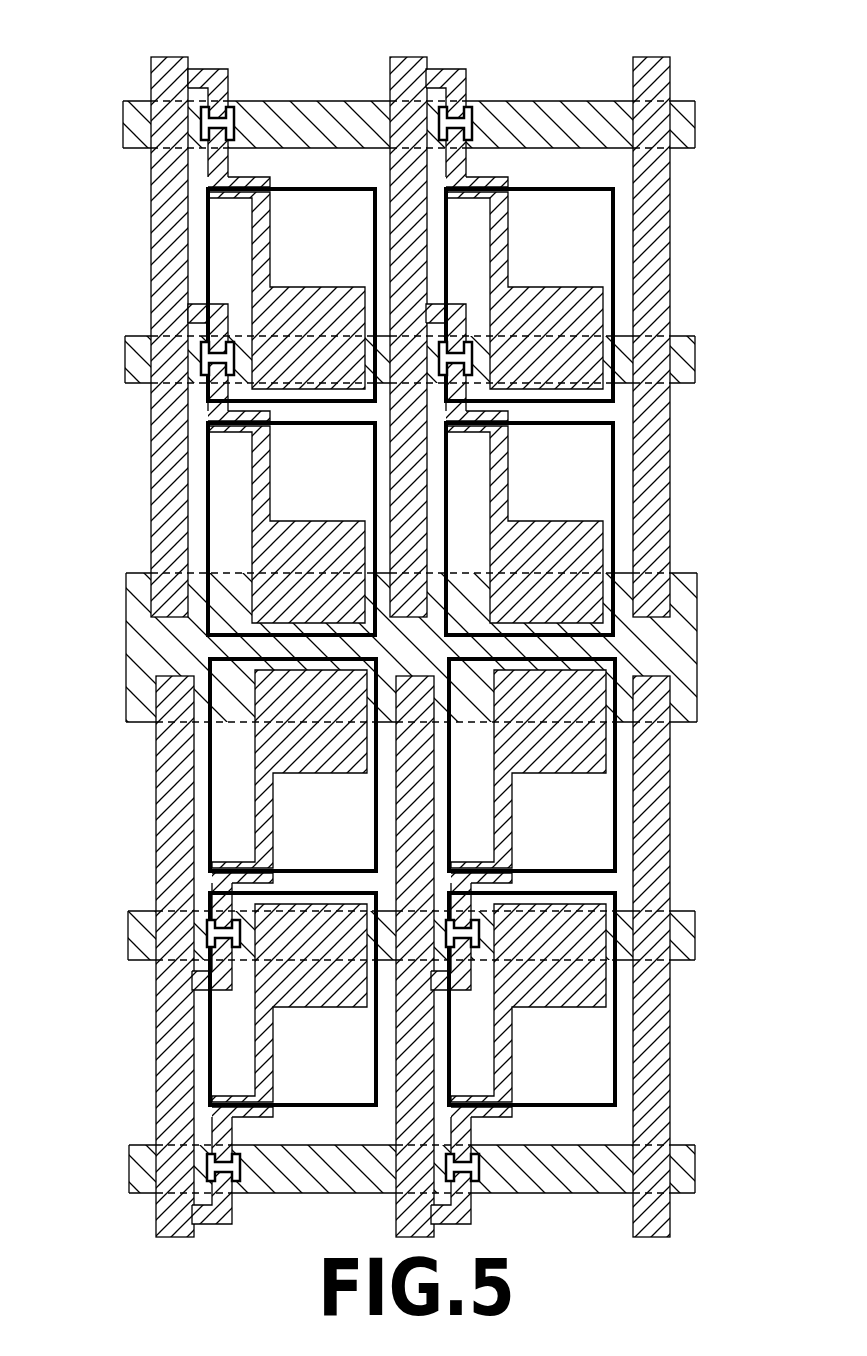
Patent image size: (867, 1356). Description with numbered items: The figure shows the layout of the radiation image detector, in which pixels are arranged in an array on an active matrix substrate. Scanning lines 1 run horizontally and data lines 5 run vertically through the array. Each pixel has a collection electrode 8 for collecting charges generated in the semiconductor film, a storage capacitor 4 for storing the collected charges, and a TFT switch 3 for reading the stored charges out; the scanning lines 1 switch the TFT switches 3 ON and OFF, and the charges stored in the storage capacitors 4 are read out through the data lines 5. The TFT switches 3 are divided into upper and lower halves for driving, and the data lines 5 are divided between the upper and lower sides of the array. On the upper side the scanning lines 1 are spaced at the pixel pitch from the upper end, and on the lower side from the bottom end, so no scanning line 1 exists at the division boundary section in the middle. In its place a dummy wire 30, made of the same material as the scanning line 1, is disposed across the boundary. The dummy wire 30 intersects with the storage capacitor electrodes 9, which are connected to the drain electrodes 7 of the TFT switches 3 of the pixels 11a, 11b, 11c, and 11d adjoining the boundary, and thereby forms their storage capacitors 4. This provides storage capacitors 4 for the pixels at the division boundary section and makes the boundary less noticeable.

The scanning line 1 is at (131, 115).
The TFT switch 3 is at (244, 121).
The storage capacitor 4 is at (308, 281).
The data line 5 is at (171, 64).
The drain electrode 7 is at (216, 409).
The collection electrode 8 is at (222, 242).
The storage capacitor electrode 9 is at (265, 305).
The pixel 11a is at (143, 484).
The pixel 11b is at (682, 485).
The pixel 11c is at (143, 819).
The pixel 11d is at (682, 820).
The dummy wire 30 is at (687, 633).